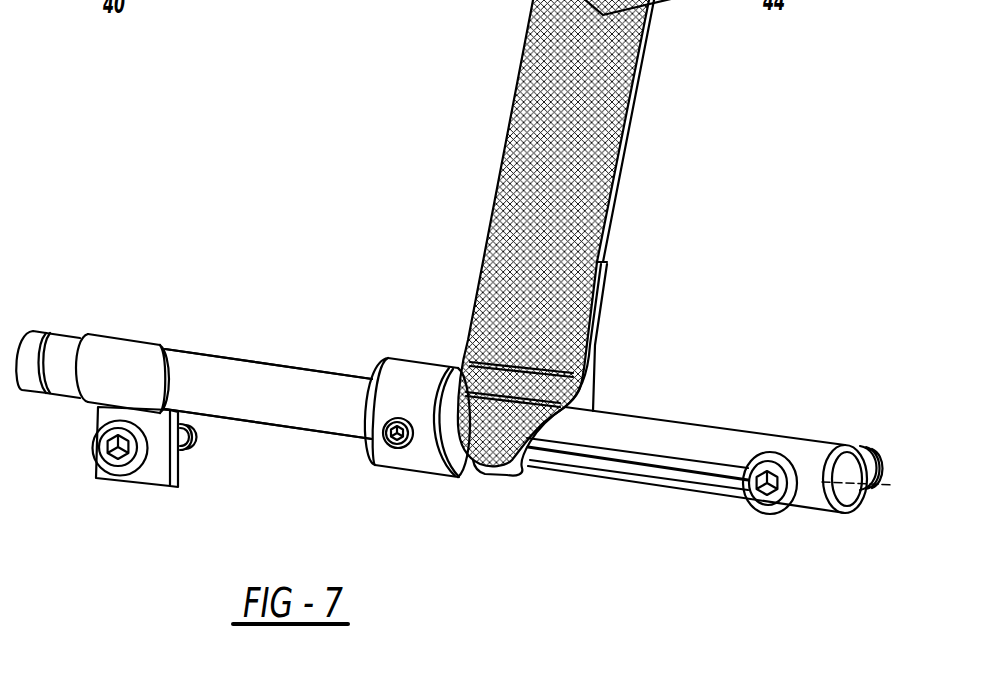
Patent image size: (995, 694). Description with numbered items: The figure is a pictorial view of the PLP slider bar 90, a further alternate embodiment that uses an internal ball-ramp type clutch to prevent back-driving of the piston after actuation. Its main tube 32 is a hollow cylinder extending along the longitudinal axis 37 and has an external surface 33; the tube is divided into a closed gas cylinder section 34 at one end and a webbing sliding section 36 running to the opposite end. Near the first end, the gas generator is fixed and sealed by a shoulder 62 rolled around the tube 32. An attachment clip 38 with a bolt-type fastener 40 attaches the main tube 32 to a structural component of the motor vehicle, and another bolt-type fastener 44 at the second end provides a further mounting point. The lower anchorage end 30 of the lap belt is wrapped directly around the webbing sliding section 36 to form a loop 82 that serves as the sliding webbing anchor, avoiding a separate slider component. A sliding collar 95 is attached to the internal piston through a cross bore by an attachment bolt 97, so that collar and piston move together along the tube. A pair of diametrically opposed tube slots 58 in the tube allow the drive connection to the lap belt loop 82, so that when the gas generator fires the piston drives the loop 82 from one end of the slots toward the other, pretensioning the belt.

The lower anchorage end 30 is at (620, 195).
The main tube 32 is at (278, 397).
The external surface 33 is at (337, 415).
The gas cylinder section 34 is at (240, 370).
The webbing sliding section 36 is at (775, 442).
The longitudinal axis 37 is at (883, 488).
The attachment clip 38 is at (124, 362).
The bolt-type fastener 40 is at (138, 463).
The bolt-type fastener 44 is at (763, 510).
The tube slots 58 is at (620, 448).
The shoulder 62 is at (38, 332).
The loop 82 is at (503, 455).
The PLP slider bar 90 is at (322, 297).
The sliding collar 95 is at (417, 382).
The attachment bolt 97 is at (405, 448).